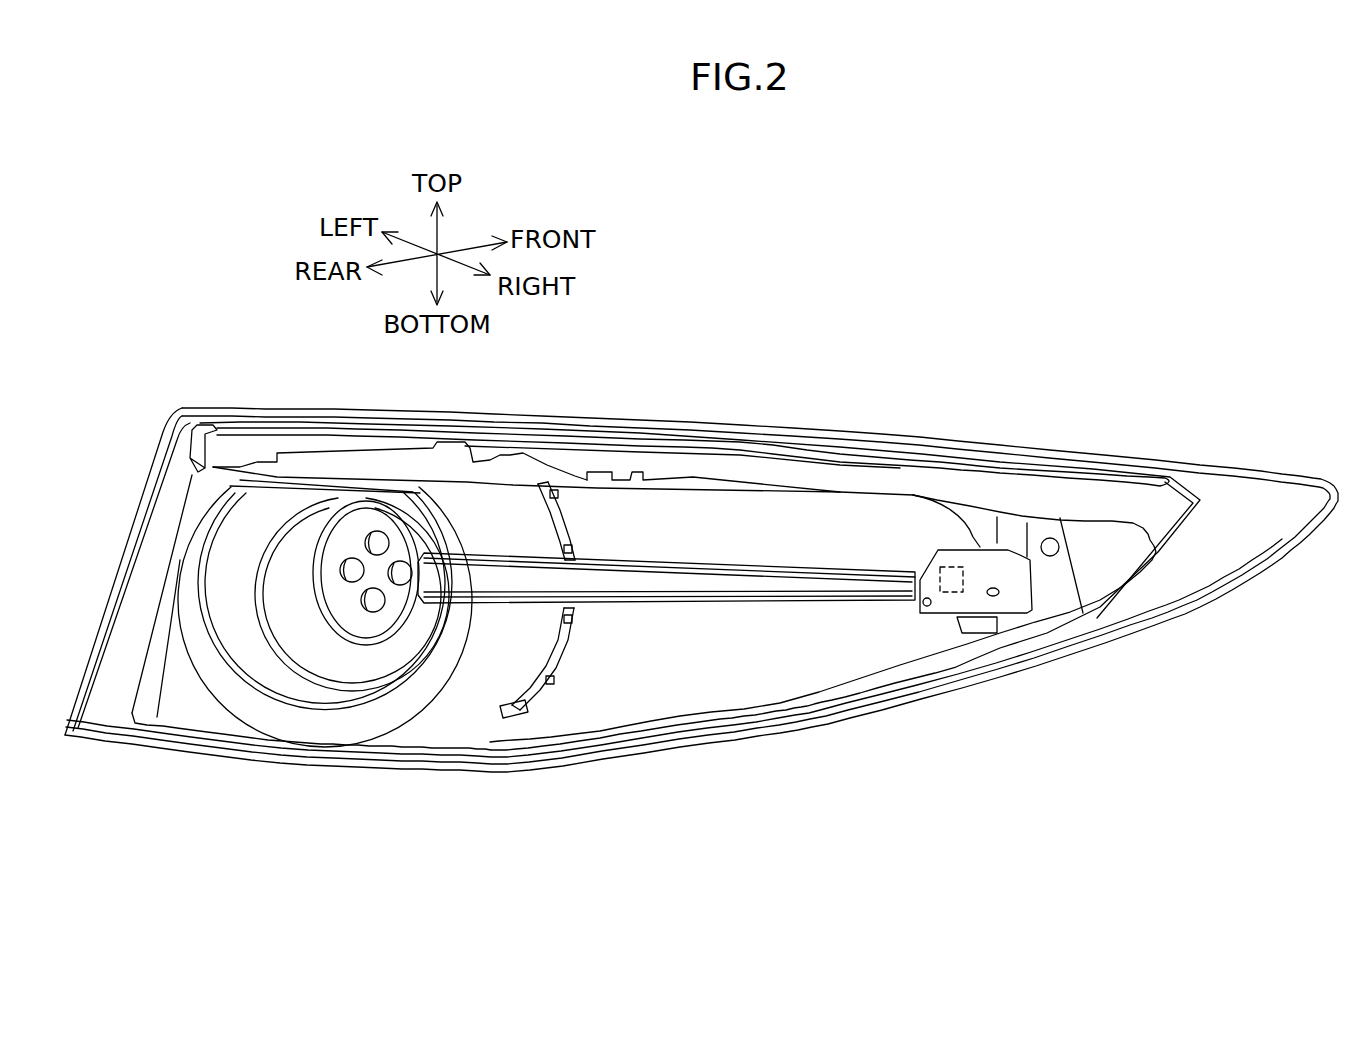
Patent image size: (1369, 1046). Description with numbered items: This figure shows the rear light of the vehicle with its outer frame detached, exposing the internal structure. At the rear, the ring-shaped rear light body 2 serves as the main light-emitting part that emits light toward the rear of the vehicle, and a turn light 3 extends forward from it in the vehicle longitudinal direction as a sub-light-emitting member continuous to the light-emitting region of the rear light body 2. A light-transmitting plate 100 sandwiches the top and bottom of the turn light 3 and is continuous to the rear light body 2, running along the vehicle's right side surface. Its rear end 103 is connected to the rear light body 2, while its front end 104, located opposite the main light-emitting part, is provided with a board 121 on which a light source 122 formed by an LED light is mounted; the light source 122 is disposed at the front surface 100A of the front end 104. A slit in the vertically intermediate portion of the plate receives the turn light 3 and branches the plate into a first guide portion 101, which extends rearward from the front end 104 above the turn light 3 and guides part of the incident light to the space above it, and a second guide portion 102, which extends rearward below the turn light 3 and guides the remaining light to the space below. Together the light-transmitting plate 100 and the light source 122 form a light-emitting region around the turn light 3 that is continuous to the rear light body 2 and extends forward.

The rear light body 2 is at (316, 729).
The turn light 3 is at (753, 587).
The light-transmitting plate 100 is at (733, 523).
The first guide portion 101 is at (807, 517).
The front surface 100A is at (870, 520).
The second guide portion 102 is at (685, 660).
The rear end 103 is at (577, 677).
The front end 104 is at (943, 530).
The board 121 is at (1012, 577).
The light source 122 is at (950, 592).